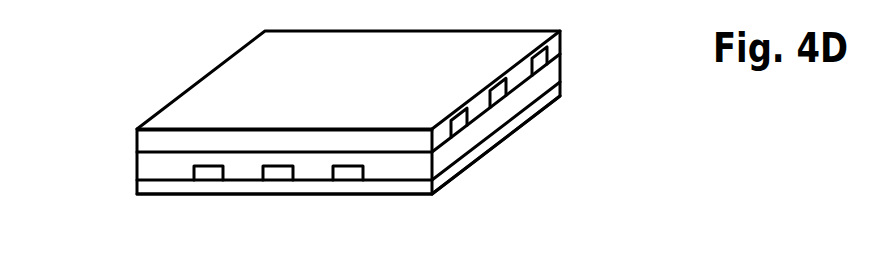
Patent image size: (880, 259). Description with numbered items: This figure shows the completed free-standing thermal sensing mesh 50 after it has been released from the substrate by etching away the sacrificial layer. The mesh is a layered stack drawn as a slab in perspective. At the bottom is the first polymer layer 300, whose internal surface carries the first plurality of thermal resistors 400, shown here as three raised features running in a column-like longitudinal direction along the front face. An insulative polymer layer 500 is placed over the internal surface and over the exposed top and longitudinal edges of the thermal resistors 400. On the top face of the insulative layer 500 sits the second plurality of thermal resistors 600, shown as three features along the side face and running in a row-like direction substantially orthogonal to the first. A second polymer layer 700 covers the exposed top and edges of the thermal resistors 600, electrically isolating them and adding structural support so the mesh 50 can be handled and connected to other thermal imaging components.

The thermal sensing mesh 50 is at (141, 102).
The second polymer layer 700 is at (258, 86).
The insulative polymer layer 500 is at (152, 168).
The first plurality of thermal resistors 400 is at (210, 173).
The first polymer layer 300 is at (465, 162).
The second plurality of thermal resistors 600 is at (546, 55).